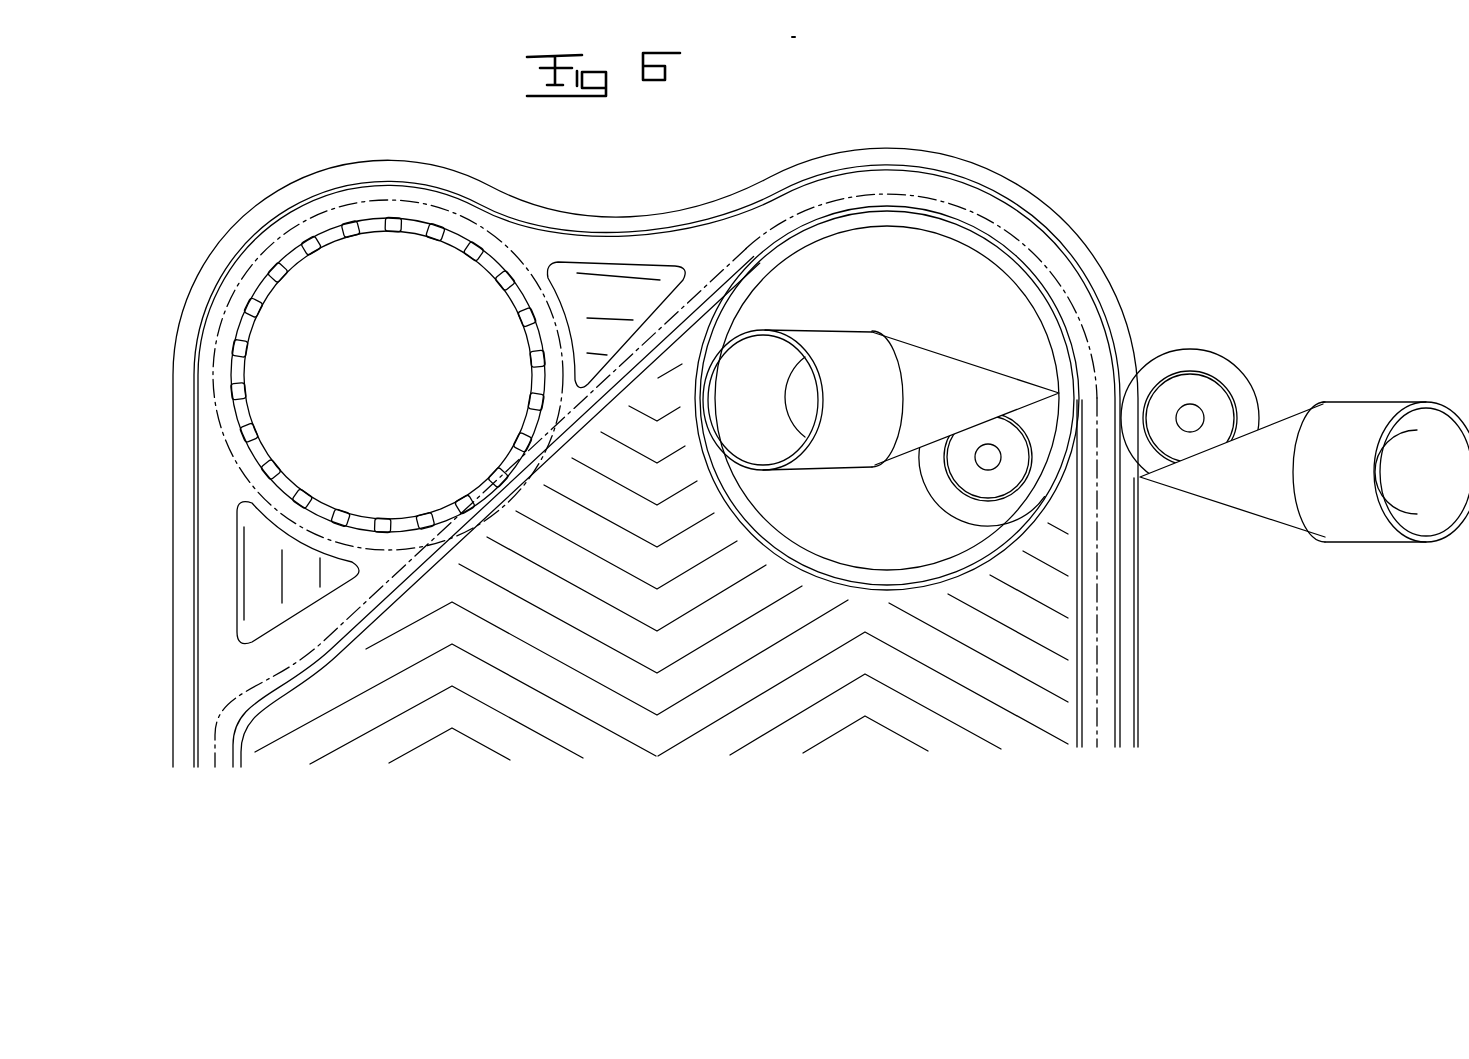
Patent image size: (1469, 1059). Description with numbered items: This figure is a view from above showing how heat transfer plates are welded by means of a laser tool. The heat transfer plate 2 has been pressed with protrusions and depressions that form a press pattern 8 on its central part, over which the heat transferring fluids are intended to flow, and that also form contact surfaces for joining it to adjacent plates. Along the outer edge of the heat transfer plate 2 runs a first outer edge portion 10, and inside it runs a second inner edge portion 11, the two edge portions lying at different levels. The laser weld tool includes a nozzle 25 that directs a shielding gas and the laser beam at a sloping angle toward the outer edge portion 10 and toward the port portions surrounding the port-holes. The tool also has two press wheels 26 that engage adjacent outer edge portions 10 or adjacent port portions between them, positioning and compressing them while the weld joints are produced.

The heat transfer plate 2 is at (690, 252).
The press pattern 8 is at (742, 683).
The first outer edge portion 10 is at (1125, 624).
The second inner edge portion 11 is at (1105, 701).
The nozzle 25 is at (935, 352).
The press wheel 26 is at (963, 510).